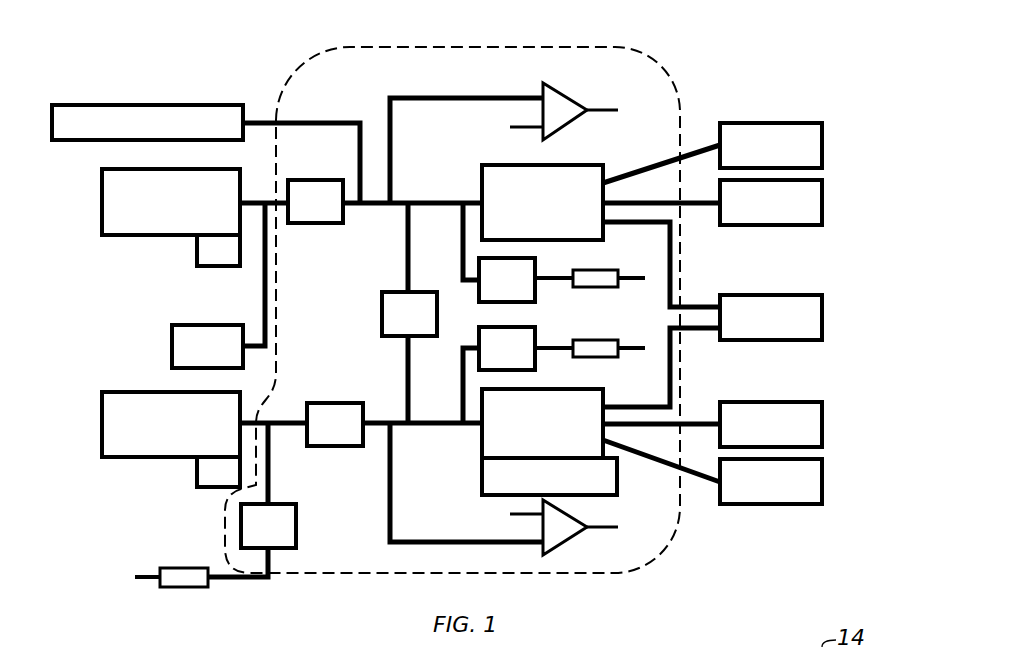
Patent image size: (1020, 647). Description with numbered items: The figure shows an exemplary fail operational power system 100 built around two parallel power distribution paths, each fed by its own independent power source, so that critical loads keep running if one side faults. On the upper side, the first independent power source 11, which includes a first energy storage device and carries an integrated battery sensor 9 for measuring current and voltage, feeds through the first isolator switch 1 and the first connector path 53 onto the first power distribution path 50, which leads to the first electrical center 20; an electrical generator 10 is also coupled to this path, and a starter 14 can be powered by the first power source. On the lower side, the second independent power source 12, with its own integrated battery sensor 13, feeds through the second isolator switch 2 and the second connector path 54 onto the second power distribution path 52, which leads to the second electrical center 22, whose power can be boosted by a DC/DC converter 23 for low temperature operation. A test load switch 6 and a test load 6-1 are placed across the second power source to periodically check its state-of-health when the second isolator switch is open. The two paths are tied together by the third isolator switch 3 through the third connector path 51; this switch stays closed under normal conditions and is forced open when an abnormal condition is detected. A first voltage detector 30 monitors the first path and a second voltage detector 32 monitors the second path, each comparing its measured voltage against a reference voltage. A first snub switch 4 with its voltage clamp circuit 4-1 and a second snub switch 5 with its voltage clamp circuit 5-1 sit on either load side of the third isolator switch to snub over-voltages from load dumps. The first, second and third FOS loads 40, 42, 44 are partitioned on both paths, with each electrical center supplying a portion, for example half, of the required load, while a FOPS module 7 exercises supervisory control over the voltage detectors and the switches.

The fail operational power system 100 is at (197, 50).
The electrical generator 10 is at (148, 105).
The FOPS module 7 is at (285, 95).
The first independent power source 11 is at (102, 200).
The integrated battery sensor 9 is at (197, 245).
The starter 14 is at (172, 350).
The second independent power source 12 is at (102, 424).
The integrated battery sensor 13 is at (197, 472).
The test load switch 6 is at (287, 503).
The test load 6-1 is at (182, 574).
The first connector path 53 is at (252, 200).
The second connector path 54 is at (272, 383).
The first power distribution path 50 is at (437, 200).
The second power distribution path 52 is at (446, 421).
The third connector path 51 is at (405, 258).
The first isolator switch 1 is at (316, 223).
The second isolator switch 2 is at (333, 403).
The third isolator switch 3 is at (382, 313).
The first snub switch 4 is at (527, 285).
The voltage clamp circuit 4-1 is at (597, 280).
The second snub switch 5 is at (527, 355).
The voltage clamp circuit 5-1 is at (597, 350).
The first electrical center 20 is at (520, 182).
The first voltage detector 30 is at (560, 110).
The second electrical center 22 is at (482, 437).
The DC/DC converter 23 is at (490, 472).
The second voltage detector 32 is at (558, 525).
The first FOS load 40 is at (822, 145).
The second FOS load 42 is at (822, 200).
The third FOS load 44 is at (822, 345).